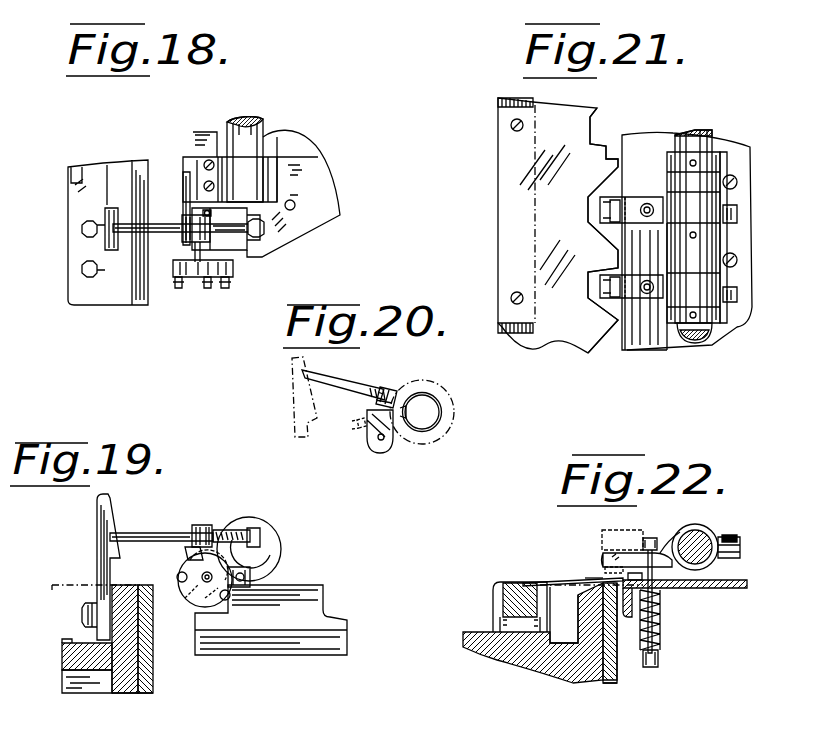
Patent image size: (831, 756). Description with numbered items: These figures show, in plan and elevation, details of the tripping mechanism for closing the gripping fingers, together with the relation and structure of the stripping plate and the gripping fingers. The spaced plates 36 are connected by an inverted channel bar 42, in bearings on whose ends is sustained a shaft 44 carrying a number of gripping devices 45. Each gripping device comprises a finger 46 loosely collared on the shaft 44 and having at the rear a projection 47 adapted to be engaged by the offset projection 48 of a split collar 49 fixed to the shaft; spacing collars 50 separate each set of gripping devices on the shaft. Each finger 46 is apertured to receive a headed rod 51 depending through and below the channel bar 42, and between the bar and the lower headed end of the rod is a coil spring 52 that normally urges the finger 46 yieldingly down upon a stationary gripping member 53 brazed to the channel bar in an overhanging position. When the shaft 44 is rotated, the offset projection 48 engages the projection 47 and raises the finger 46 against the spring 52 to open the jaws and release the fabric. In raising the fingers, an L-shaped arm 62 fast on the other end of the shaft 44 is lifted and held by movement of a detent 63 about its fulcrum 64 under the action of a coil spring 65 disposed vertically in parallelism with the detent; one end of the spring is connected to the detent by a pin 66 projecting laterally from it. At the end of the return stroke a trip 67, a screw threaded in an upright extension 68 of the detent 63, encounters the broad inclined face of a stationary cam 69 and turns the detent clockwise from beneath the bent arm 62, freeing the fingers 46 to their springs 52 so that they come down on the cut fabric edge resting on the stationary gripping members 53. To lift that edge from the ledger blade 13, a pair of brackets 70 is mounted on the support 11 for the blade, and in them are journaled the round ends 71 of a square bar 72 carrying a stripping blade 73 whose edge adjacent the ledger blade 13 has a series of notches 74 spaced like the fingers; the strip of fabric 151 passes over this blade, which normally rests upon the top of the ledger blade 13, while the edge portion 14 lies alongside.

In FIG. 19, the support 11 is at (63, 658).
In FIG. 22, the support 11 is at (573, 663).
In FIG. 18, the ledger blade 13 is at (142, 167).
In FIG. 19, the ledger blade 13 is at (150, 653).
In FIG. 22, the ledger blade 13 is at (618, 662).
In FIG. 19, the plate edge 14 is at (147, 673).
In FIG. 22, the plate edge 14 is at (613, 674).
In FIG. 18, the spaced plates 36 is at (290, 153).
In FIG. 19, the spaced plates 36 is at (340, 627).
In FIG. 21, the inverted channel bar 42 is at (730, 330).
In FIG. 22, the inverted channel bar 42 is at (733, 589).
In FIG. 18, the shaft 44 is at (248, 118).
In FIG. 20, the shaft 44 is at (441, 414).
In FIG. 19, the shaft 44 is at (262, 552).
In FIG. 21, the shaft 44 is at (697, 146).
In FIG. 22, the shaft 44 is at (703, 537).
In FIG. 21, the gripping devices 45 is at (673, 256).
In FIG. 22, the gripping devices 45 is at (725, 570).
In FIG. 21, the finger 46 is at (613, 225).
In FIG. 22, the finger 46 is at (603, 558).
In FIG. 21, the projection 47 is at (737, 219).
In FIG. 22, the projection 47 is at (741, 551).
In FIG. 21, the offset projection 48 is at (738, 195).
In FIG. 22, the offset projection 48 is at (737, 538).
In FIG. 21, the split collar 49 is at (723, 169).
In FIG. 21, the spacing collars 50 is at (720, 158).
In FIG. 21, the headed rod 51 is at (647, 203).
In FIG. 22, the headed rod 51 is at (653, 578).
In FIG. 22, the coil spring 52 is at (660, 631).
In FIG. 21, the stationary gripping member 53 is at (616, 200).
In FIG. 22, the stationary gripping member 53 is at (636, 570).
In FIG. 18, the L-shaped arm 62 is at (185, 199).
In FIG. 20, the L-shaped arm 62 is at (357, 426).
In FIG. 19, the L-shaped arm 62 is at (185, 547).
In FIG. 20, the detent 63 is at (370, 434).
In FIG. 19, the detent 63 is at (178, 561).
In FIG. 20, the fulcrum 64 is at (381, 441).
In FIG. 19, the fulcrum 64 is at (203, 583).
In FIG. 18, the coil spring 65 is at (200, 280).
In FIG. 19, the coil spring 65 is at (183, 562).
In FIG. 18, the pin 66 is at (215, 284).
In FIG. 19, the pin 66 is at (214, 531).
In FIG. 18, the trip 67 is at (171, 234).
In FIG. 20, the trip 67 is at (348, 382).
In FIG. 19, the trip 67 is at (165, 531).
In FIG. 18, the upright extension 68 is at (195, 243).
In FIG. 20, the upright extension 68 is at (388, 388).
In FIG. 19, the upright extension 68 is at (200, 523).
In FIG. 18, the stationary cam 69 is at (103, 238).
In FIG. 20, the stationary cam 69 is at (293, 407).
In FIG. 19, the stationary cam 69 is at (100, 521).
In FIG. 22, the brackets 70 is at (502, 607).
In FIG. 22, the round ends 71 is at (551, 607).
In FIG. 21, the square bar 72 is at (523, 333).
In FIG. 22, the square bar 72 is at (503, 603).
In FIG. 19, the stripping blade 73 is at (62, 590).
In FIG. 21, the stripping blade 73 is at (570, 333).
In FIG. 22, the stripping blade 73 is at (553, 582).
In FIG. 21, the notches 74 is at (597, 133).
In FIG. 22, the strip of fabric 151 is at (597, 578).